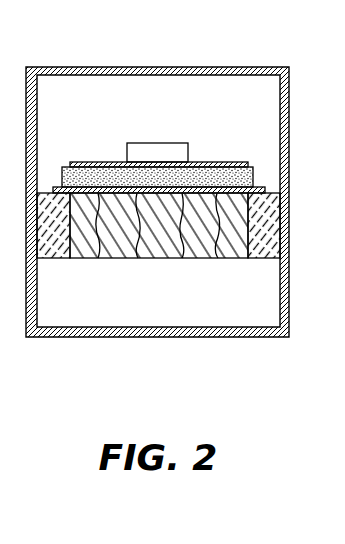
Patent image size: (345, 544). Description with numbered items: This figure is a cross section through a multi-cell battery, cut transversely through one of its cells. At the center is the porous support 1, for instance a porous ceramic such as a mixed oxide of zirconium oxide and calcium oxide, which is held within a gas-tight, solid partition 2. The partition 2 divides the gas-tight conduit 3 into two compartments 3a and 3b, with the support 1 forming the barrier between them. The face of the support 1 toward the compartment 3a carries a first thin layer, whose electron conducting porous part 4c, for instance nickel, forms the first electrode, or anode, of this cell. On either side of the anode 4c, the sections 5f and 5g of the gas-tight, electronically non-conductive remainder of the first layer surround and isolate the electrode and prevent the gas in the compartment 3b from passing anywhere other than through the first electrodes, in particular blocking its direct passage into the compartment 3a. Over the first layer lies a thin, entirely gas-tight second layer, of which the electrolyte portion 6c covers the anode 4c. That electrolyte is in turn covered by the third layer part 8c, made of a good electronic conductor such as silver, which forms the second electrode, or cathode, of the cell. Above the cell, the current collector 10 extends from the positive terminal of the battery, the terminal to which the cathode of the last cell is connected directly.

The porous support 1 is at (164, 258).
The gas-tight solid partition 2 is at (54, 260).
The gas-tight conduit 3 is at (78, 67).
The conduit compartment 3a is at (182, 87).
The conduit compartment 3b is at (152, 322).
The first electrode part 4c is at (91, 187).
The gas-tight non-conductive section 5f is at (56, 187).
The gas-tight non-conductive section 5g is at (259, 187).
The electrolyte portion 6c is at (226, 167).
The second electrode part 8c is at (200, 162).
The current collector 10 is at (150, 152).